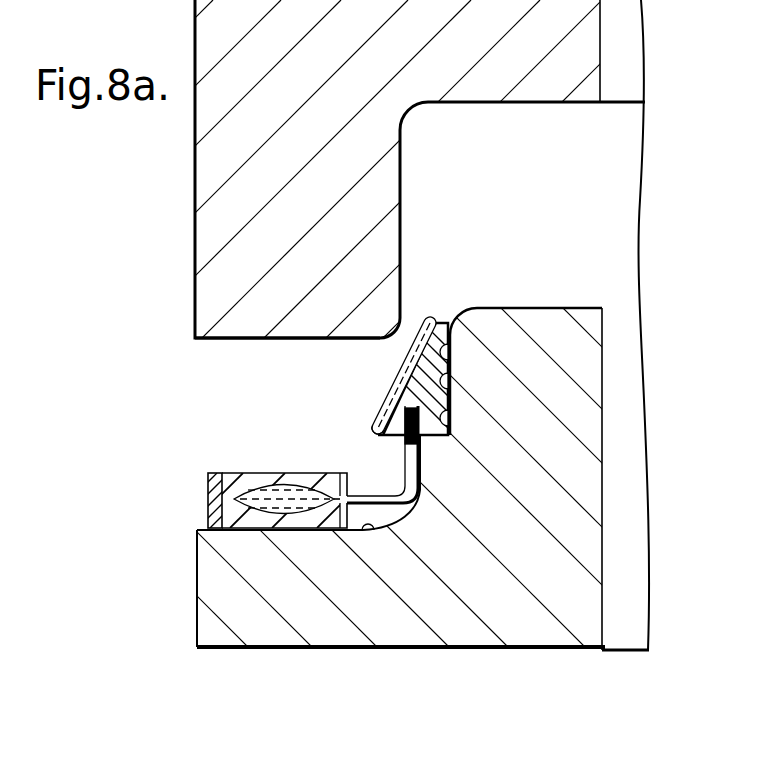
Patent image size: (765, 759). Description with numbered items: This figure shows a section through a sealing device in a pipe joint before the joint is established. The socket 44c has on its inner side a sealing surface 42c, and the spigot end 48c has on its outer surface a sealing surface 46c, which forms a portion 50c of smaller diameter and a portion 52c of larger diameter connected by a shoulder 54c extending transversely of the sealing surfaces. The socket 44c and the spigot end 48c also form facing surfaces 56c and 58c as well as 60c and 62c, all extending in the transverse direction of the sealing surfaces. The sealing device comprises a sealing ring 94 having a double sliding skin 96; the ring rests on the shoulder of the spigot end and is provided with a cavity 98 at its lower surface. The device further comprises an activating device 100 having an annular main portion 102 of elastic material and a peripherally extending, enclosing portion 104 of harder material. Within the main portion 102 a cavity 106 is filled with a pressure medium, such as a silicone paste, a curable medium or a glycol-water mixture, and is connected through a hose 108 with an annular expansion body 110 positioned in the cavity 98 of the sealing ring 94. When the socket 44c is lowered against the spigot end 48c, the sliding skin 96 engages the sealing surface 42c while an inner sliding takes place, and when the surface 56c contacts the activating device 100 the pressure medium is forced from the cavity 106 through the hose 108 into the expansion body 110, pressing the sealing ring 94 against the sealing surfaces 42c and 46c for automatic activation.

The socket 44c is at (220, 45).
The socket surface 60c is at (487, 103).
The sealing surface 42c is at (403, 258).
The socket surface 56c is at (264, 338).
The smaller-diameter portion 50c is at (431, 355).
The spigot end surface 62c is at (565, 307).
The sealing surface 46c is at (450, 374).
The shoulder 54c is at (450, 417).
The double sliding skin 96 is at (398, 358).
The sealing ring 94 is at (420, 387).
The annular expansion body 110 is at (404, 420).
The cavity 98 is at (376, 433).
The activating device 100 is at (272, 508).
The hose 108 is at (372, 496).
The enclosing portion 104 is at (210, 493).
The annular main portion 102 is at (247, 517).
The cavity 106 is at (290, 508).
The spigot end surface 58c is at (381, 528).
The larger-diameter portion 52c is at (413, 493).
The spigot end 48c is at (563, 600).